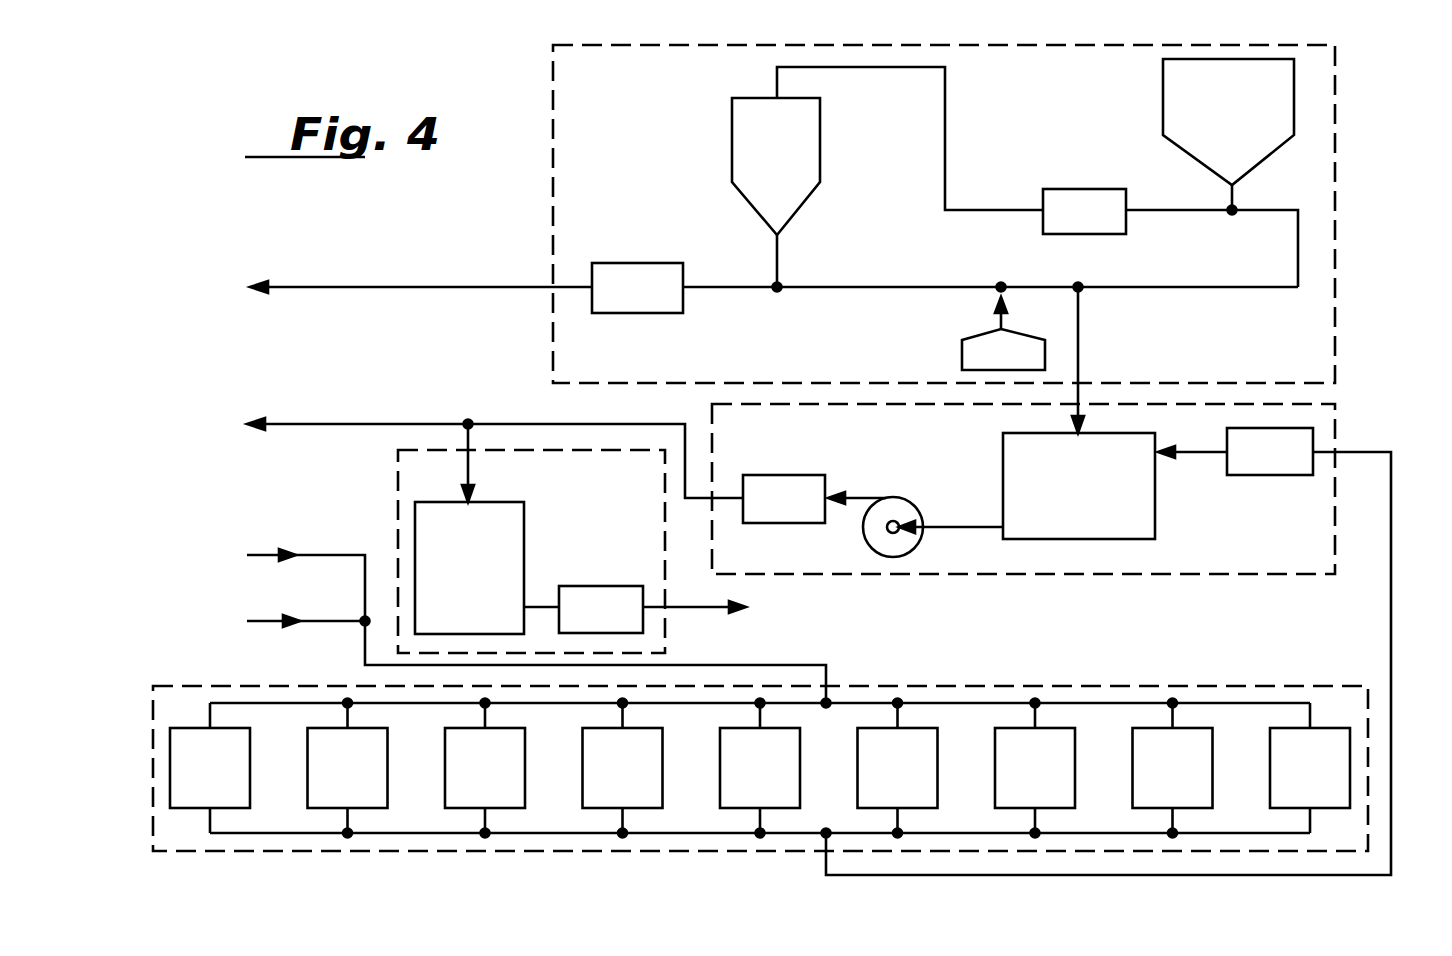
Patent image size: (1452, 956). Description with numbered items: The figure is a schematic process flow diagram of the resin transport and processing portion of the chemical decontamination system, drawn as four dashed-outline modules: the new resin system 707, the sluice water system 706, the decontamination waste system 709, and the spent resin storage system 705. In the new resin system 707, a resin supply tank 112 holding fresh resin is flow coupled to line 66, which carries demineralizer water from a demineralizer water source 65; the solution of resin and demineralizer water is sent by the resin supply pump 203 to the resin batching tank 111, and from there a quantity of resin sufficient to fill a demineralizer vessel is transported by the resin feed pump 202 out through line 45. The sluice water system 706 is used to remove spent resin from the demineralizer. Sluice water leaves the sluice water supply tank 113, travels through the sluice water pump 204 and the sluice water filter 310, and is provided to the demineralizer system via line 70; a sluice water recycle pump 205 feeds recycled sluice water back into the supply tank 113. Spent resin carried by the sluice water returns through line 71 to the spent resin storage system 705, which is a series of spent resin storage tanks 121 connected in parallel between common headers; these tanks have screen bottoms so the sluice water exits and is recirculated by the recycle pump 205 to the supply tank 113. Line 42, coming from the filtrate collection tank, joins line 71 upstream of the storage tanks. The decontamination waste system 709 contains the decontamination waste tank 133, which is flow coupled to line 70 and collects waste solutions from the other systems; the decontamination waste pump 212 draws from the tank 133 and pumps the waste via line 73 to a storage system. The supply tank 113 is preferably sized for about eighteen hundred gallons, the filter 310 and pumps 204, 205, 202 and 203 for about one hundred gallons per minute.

The line 45 is at (383, 287).
The line 70 is at (358, 424).
The line 71 is at (310, 555).
The line 42 is at (333, 621).
The line 73 is at (693, 609).
The demineralizer water source 65 is at (980, 352).
The line 66 is at (1248, 290).
The resin batching tank 111 is at (758, 150).
The resin supply tank 112 is at (1249, 113).
The sluice water supply tank 113 is at (1060, 500).
The spent resin storage tanks 121 is at (192, 785).
The decontamination waste tank 133 is at (490, 586).
The resin feed pump 202 is at (636, 263).
The resin supply pump 203 is at (1083, 189).
The sluice water pump 204 is at (898, 508).
The sluice water recycle pump 205 is at (1242, 465).
The decontamination waste pump 212 is at (598, 588).
The sluice water filter 310 is at (793, 480).
The spent resin storage system 705 is at (1070, 686).
The sluice water system 706 is at (1337, 417).
The new resin system 707 is at (1337, 145).
The decontamination waste system 709 is at (397, 468).